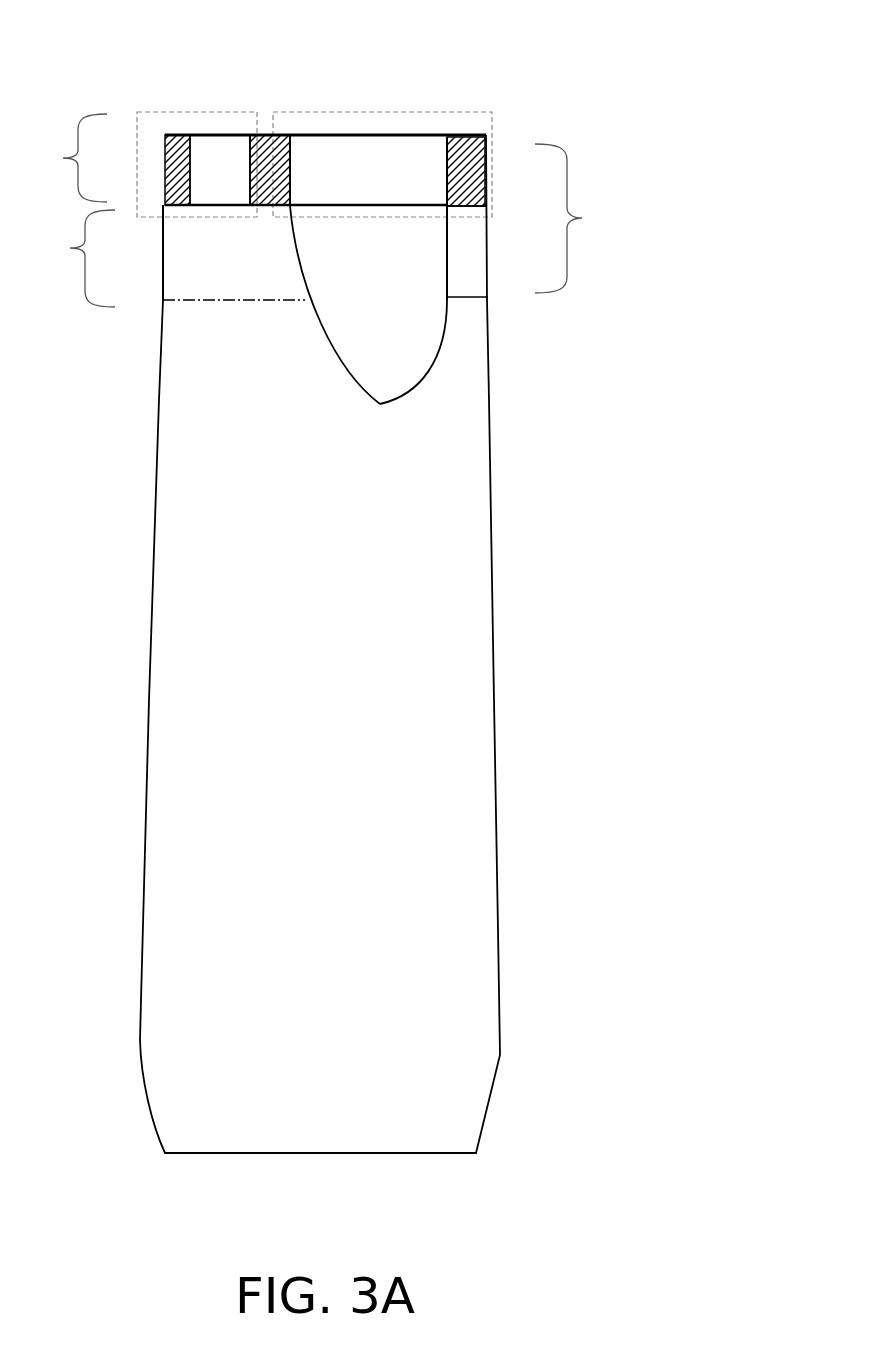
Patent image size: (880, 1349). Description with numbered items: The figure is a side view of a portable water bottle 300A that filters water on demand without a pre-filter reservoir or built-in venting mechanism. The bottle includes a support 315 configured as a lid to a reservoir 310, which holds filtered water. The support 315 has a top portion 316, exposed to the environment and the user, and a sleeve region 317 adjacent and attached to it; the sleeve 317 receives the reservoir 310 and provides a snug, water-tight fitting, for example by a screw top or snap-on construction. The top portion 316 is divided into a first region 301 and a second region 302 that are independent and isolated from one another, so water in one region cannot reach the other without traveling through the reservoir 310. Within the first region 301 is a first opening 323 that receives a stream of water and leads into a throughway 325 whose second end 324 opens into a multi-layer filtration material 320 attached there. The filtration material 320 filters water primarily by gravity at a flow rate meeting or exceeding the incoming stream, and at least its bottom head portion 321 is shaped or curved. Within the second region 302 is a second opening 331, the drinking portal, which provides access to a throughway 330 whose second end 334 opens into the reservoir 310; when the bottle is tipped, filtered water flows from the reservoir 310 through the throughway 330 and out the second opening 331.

The portable water bottle 300A is at (752, 56).
The first region 301 is at (478, 107).
The second region 302 is at (147, 105).
The reservoir 310 is at (430, 997).
The support 315 is at (590, 218).
The top portion 316 is at (62, 158).
The sleeve region 317 is at (70, 258).
The multi-layer filtration material 320 is at (430, 372).
The bottom head portion 321 is at (357, 400).
The first opening 323 is at (402, 133).
The second end 324 is at (390, 207).
The throughway 325 is at (355, 157).
The throughway 330 is at (232, 130).
The second opening 331 is at (205, 130).
The second end 334 is at (215, 206).